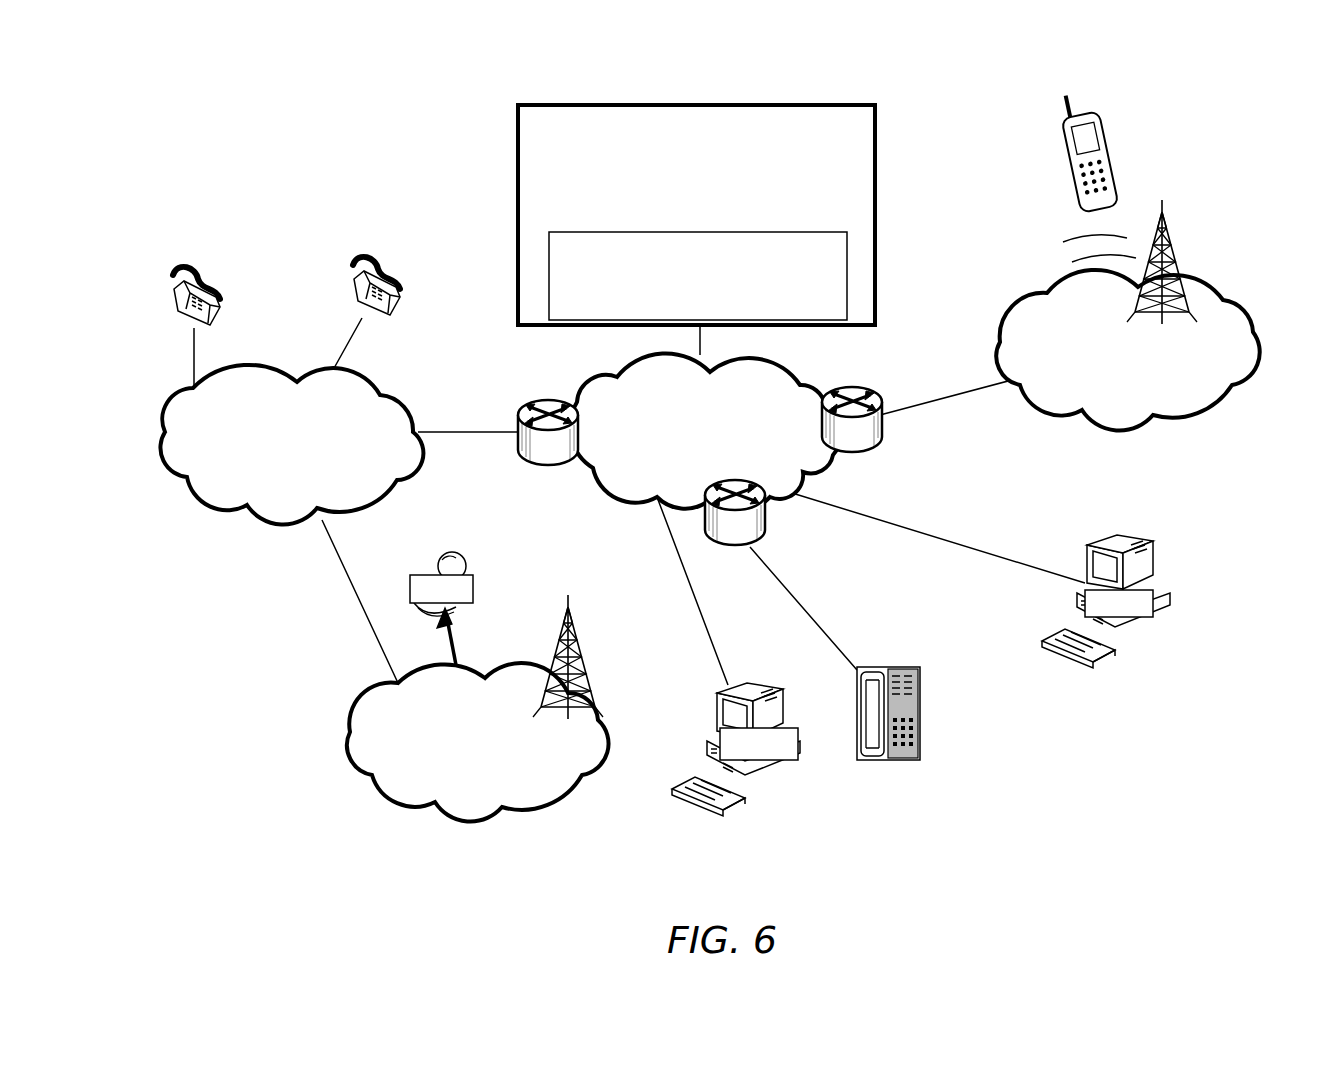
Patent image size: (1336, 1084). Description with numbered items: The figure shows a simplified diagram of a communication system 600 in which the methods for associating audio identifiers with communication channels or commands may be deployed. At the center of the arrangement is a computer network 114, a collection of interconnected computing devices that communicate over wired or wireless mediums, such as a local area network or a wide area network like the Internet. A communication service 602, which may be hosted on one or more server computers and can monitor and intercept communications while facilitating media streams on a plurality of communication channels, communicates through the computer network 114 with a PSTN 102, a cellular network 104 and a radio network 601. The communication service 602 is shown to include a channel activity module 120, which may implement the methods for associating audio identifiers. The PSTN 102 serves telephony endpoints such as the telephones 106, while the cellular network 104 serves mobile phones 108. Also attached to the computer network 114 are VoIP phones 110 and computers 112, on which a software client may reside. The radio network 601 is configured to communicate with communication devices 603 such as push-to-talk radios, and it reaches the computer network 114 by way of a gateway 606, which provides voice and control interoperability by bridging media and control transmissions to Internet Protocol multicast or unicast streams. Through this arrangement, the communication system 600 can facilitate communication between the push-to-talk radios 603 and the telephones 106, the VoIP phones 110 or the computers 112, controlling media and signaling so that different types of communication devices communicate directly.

The communication system 600 is at (910, 164).
The communication service 602 is at (680, 176).
The channel activity module 120 is at (1136, 615).
The computer network 114 is at (685, 456).
The gateway 606 is at (873, 388).
The public switched telephone network (PSTN) 102 is at (340, 456).
The telephones 106 is at (430, 236).
The cellular network 104 is at (460, 766).
The mobile phones 108 is at (467, 562).
The Voice over Internet Protocol (VoIP) phones 110 is at (920, 700).
The computers 112 is at (1194, 686).
The radio network 601 is at (1110, 376).
The communication devices (push-to-talk radios) 603 is at (1118, 182).